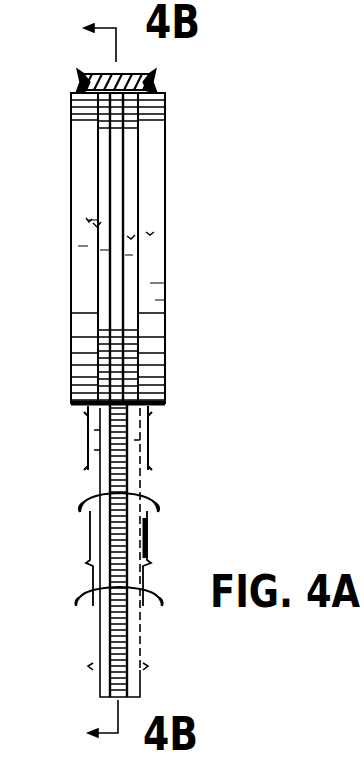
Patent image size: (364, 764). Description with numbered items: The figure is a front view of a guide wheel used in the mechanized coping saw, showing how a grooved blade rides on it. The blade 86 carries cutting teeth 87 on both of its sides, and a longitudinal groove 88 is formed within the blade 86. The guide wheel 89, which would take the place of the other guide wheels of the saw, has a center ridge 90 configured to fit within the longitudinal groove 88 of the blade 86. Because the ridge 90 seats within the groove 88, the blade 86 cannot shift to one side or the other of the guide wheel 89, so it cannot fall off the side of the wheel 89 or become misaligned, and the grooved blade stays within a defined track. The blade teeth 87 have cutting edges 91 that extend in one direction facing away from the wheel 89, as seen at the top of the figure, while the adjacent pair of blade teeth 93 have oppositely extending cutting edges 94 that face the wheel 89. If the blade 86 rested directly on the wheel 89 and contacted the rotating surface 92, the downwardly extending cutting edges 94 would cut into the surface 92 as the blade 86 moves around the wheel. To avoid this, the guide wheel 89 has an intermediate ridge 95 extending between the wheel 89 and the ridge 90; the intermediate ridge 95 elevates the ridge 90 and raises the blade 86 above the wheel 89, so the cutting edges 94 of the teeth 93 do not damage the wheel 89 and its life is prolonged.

The blade 86 is at (192, 81).
The cutting teeth 87 is at (90, 521).
The longitudinal groove 88 is at (122, 438).
The guide wheel 89 is at (166, 303).
The center ridge 90 is at (115, 204).
The cutting edges 91 is at (82, 72).
The rotating surface 92 is at (88, 221).
The blade teeth 93 is at (86, 606).
The cutting edges 94 is at (82, 95).
The intermediate ridge 95 is at (130, 237).